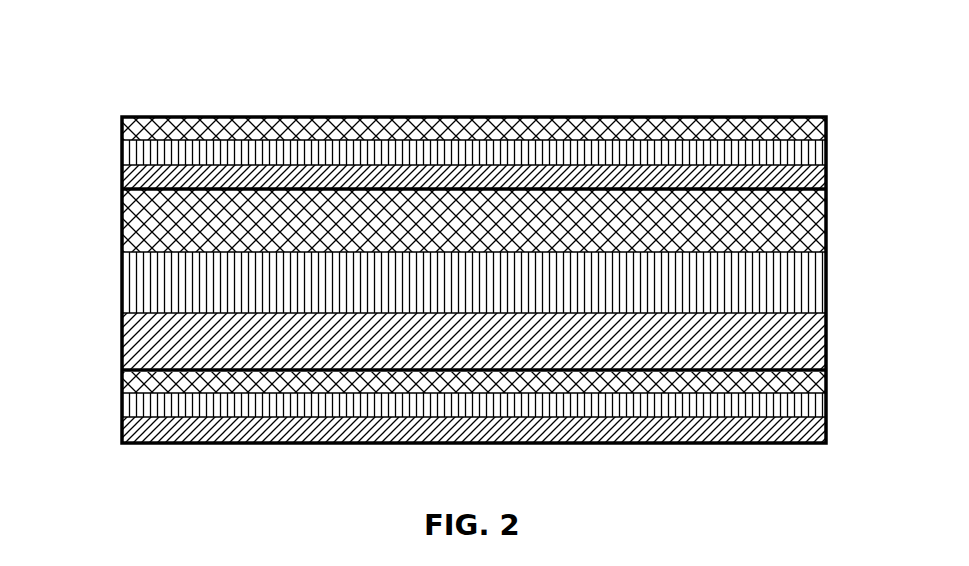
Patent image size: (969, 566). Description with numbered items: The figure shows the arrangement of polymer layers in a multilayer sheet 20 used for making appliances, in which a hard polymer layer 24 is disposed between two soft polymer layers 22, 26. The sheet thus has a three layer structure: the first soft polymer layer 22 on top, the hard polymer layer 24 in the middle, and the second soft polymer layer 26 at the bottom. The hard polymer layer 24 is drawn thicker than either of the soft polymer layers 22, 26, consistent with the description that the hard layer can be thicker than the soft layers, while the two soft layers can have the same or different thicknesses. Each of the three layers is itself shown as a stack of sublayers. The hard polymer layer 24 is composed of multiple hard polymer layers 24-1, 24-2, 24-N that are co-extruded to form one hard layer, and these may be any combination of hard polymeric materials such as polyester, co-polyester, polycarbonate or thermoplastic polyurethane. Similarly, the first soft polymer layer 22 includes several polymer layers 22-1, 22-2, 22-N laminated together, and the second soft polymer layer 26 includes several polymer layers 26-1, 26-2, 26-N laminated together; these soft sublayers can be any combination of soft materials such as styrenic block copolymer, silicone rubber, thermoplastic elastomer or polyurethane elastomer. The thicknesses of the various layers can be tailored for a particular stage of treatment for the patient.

The multilayer sheet 20 is at (479, 260).
The soft polymer layer 22 is at (530, 136).
The polymer layer 22-1 is at (828, 130).
The polymer layer 22-2 is at (828, 150).
The polymer layer 22-N is at (828, 174).
The hard polymer layer 24 is at (469, 282).
The hard polymer layer 24-1 is at (122, 222).
The hard polymer layer 24-2 is at (122, 280).
The hard polymer layer 24-N is at (122, 336).
The soft polymer layer 26 is at (530, 423).
The polymer layer 26-1 is at (828, 383).
The polymer layer 26-2 is at (828, 400).
The polymer layer 26-N is at (828, 425).